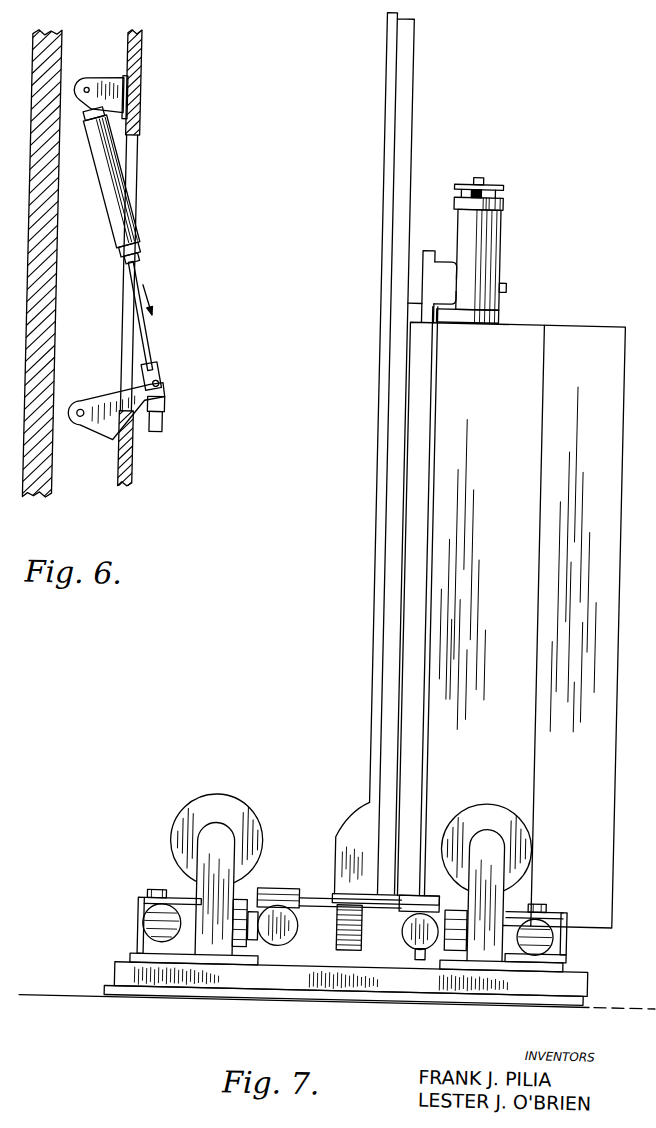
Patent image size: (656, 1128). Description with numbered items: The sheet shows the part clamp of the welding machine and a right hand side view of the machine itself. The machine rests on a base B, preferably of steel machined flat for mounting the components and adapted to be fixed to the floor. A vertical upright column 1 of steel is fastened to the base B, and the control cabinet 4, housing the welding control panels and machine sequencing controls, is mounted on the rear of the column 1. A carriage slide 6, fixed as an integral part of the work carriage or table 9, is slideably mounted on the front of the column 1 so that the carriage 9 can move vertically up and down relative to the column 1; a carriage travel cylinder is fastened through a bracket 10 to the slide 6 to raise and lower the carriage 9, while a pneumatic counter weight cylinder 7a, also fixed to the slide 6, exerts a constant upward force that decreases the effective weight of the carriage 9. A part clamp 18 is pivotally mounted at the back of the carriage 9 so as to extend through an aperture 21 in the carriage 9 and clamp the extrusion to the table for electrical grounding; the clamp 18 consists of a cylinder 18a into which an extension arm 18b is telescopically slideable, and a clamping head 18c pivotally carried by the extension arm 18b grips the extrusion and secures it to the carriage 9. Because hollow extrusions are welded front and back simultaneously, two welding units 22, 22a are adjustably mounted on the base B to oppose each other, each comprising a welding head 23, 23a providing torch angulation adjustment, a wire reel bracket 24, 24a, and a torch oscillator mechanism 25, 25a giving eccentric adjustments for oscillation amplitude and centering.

In FIG. 7, the vertical upright column 1 is at (516, 325).
In FIG. 7, the control cabinet 4 is at (580, 327).
In FIG. 7, the carriage slide 6 is at (414, 263).
In FIG. 7, the pneumatic counter weight cylinder 7a is at (466, 246).
In FIG. 6, the work carriage 9 is at (115, 88).
In FIG. 7, the work carriage 9 is at (370, 78).
In FIG. 7, the bracket 10 is at (492, 287).
In FIG. 6, the part clamp 18 is at (147, 258).
In FIG. 6, the cylinder 18a is at (91, 204).
In FIG. 6, the extension arm 18b is at (137, 346).
In FIG. 6, the clamping head 18c is at (152, 419).
In FIG. 6, the aperture 21 is at (120, 157).
In FIG. 7, the welding unit 22 is at (215, 798).
In FIG. 7, the welding unit 22a is at (483, 803).
In FIG. 7, the welding head 23 is at (282, 902).
In FIG. 7, the welding head 23a is at (404, 910).
In FIG. 7, the wire reel bracket 24 is at (176, 860).
In FIG. 7, the wire reel bracket 24a is at (528, 852).
In FIG. 7, the torch oscillator mechanism 25 is at (147, 928).
In FIG. 7, the torch oscillator mechanism 25a is at (548, 944).
In FIG. 7, the base B is at (115, 983).